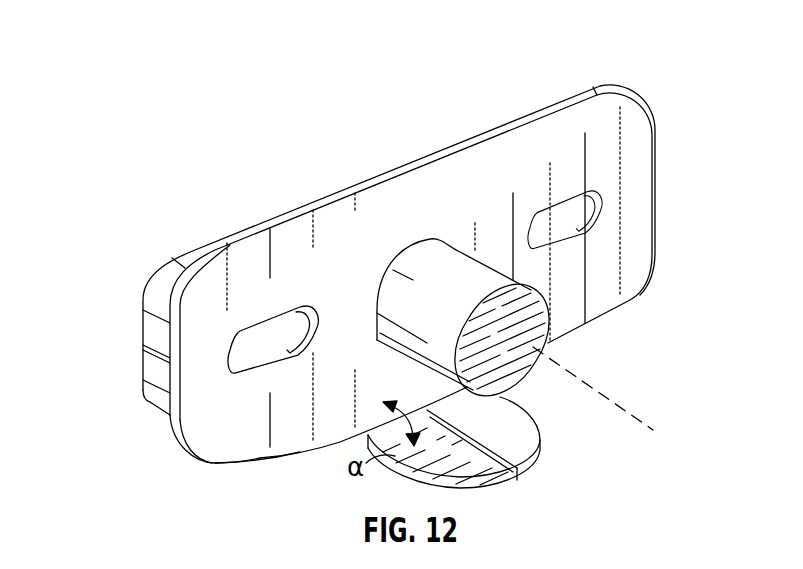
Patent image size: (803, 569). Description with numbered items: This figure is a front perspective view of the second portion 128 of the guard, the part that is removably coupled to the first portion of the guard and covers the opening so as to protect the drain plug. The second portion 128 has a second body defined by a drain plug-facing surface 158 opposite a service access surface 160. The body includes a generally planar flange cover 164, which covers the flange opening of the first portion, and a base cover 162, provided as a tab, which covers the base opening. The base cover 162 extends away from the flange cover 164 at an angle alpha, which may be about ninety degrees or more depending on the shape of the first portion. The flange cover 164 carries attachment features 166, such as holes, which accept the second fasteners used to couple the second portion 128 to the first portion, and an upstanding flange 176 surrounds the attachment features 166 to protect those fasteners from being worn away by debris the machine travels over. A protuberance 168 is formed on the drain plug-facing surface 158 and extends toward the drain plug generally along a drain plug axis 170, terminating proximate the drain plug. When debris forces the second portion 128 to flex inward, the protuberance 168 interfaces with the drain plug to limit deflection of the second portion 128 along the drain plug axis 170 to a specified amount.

The second portion 128 is at (112, 176).
The drain plug-facing surface 158 is at (625, 135).
The service access surface 160 is at (567, 92).
The base cover 162 is at (518, 423).
The flange cover 164 is at (230, 427).
The attachment features 166 is at (280, 337).
The protuberance 168 is at (523, 333).
The drain plug axis 170 is at (630, 417).
The upstanding flange 176 is at (167, 296).